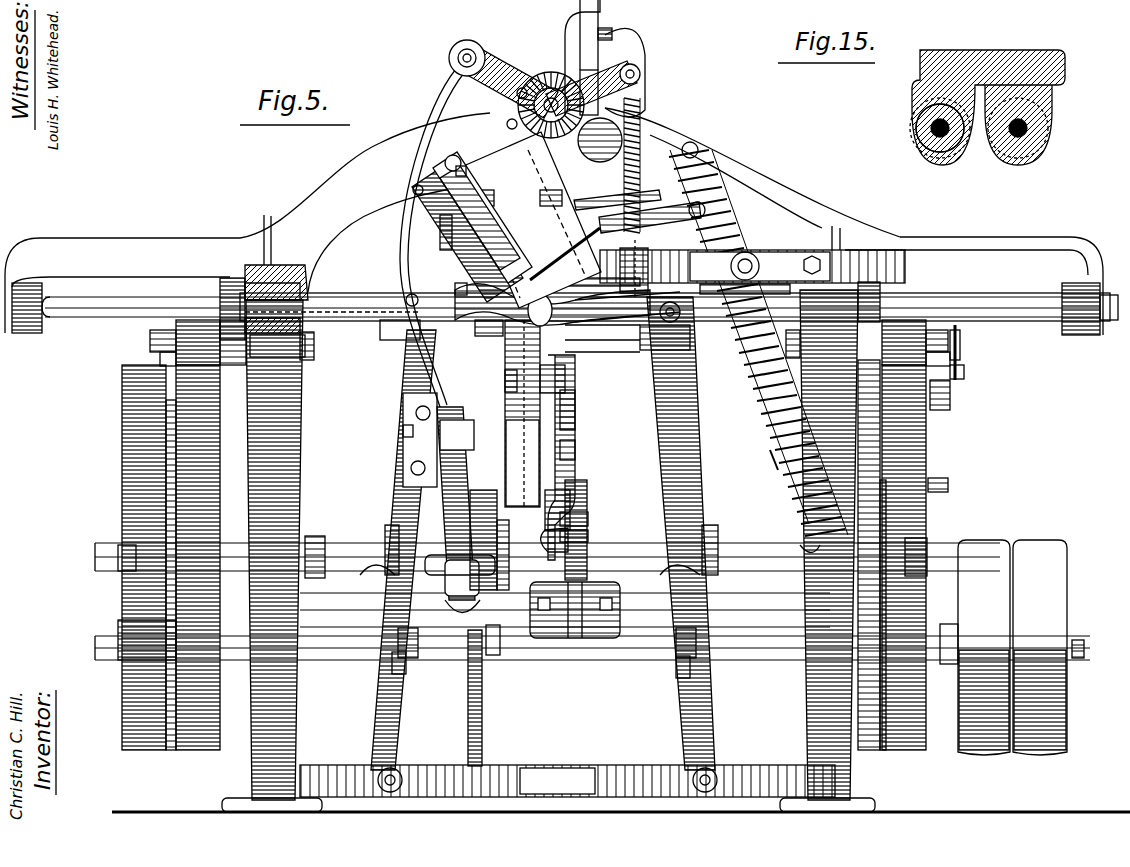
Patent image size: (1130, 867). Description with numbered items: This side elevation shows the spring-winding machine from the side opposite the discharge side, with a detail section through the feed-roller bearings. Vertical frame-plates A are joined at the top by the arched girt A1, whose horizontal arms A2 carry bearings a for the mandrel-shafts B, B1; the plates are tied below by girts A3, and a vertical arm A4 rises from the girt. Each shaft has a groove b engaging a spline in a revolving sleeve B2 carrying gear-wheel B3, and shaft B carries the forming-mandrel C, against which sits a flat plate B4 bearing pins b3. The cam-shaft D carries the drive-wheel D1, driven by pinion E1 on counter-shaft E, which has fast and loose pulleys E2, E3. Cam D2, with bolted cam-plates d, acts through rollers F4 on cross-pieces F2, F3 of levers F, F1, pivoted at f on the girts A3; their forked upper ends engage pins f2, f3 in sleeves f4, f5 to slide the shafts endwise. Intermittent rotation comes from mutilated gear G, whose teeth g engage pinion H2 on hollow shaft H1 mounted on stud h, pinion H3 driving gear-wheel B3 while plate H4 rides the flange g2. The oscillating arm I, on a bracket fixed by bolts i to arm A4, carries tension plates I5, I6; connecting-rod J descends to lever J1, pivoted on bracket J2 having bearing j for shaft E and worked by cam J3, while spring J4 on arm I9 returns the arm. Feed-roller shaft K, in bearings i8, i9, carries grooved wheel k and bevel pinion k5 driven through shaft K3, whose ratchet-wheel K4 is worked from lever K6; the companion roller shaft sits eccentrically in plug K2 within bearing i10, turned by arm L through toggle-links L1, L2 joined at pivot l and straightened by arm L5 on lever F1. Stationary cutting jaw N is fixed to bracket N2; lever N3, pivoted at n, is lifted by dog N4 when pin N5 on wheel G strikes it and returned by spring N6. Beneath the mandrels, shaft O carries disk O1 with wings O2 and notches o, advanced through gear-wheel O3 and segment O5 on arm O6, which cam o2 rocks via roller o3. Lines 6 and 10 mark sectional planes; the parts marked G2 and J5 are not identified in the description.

In FIG. 5, the frame-plate A is at (548, 551).
In FIG. 5, the arched girt A1 is at (570, 204).
In FIG. 5, the horizontal arm A2 is at (554, 286).
In FIG. 5, the longitudinal girt A3 is at (567, 781).
In FIG. 5, the vertical arm A4 is at (628, 60).
In FIG. 5, the mandrel-shaft B is at (1004, 310).
In FIG. 5, the mandrel-shaft B1 is at (138, 300).
In FIG. 5, the revolving sleeve B2 is at (305, 292).
In FIG. 5, the gear-wheel B3 is at (232, 285).
In FIG. 5, the flat plate B4 is at (636, 352).
In FIG. 5, the bearing a is at (1075, 290).
In FIG. 5, the longitudinal groove b is at (310, 312).
In FIG. 5, the pin b3 is at (596, 295).
In FIG. 5, the forming-mandrel C is at (470, 340).
In FIG. 5, the cam shaft D is at (100, 554).
In FIG. 5, the drive-wheel D1 is at (125, 497).
In FIG. 5, the cam D2 is at (395, 520).
In FIG. 5, the cam-plate d is at (526, 563).
In FIG. 5, the counter-shaft E is at (98, 647).
In FIG. 5, the pinion E1 is at (118, 630).
In FIG. 5, the belt-pulley E2 is at (1040, 647).
In FIG. 5, the belt-pulley E3 is at (984, 647).
In FIG. 5, the lever F is at (668, 710).
In FIG. 5, the lever F1 is at (405, 400).
In FIG. 5, the cross-piece F2 is at (680, 668).
In FIG. 5, the cross-piece F3 is at (405, 670).
In FIG. 5, the anti-friction roller F4 is at (415, 636).
In FIG. 5, the pivot f is at (715, 772).
In FIG. 5, the pin f2 is at (708, 350).
In FIG. 5, the pin f3 is at (394, 326).
In FIG. 5, the sleeve f4 is at (667, 300).
In FIG. 5, the sleeve f5 is at (408, 289).
In FIG. 5, the mutilated gear-wheel G is at (908, 758).
In FIG. 5, the gear G2 is at (205, 505).
In FIG. 5, the gear-teeth g is at (212, 472).
In FIG. 5, the bearing-flange g2 is at (122, 440).
In FIG. 5, the hollow shaft H1 is at (160, 340).
In FIG. 5, the gear-pinion H2 is at (195, 330).
In FIG. 5, the gear-pinion H3 is at (238, 365).
In FIG. 5, the bearing-plate H4 is at (160, 360).
In FIG. 5, the bearing-stud h is at (310, 345).
In FIG. 15, the oscillating arm I is at (985, 55).
In FIG. 5, the tension plate I5 is at (541, 232).
In FIG. 5, the tension plate I6 is at (478, 55).
In FIG. 5, the arm I9 is at (640, 80).
In FIG. 5, the bolt i is at (612, 38).
In FIG. 5, the bearing i8 is at (452, 295).
In FIG. 15, the bearing i8 is at (1040, 100).
In FIG. 5, the bearing i9 is at (457, 220).
In FIG. 15, the elongated bearing i10 is at (915, 100).
In FIG. 5, the connecting-rod J is at (452, 82).
In FIG. 5, the lever J1 is at (460, 553).
In FIG. 5, the bracket J2 is at (468, 702).
In FIG. 5, the cam J3 is at (482, 510).
In FIG. 5, the spiral spring J4 is at (660, 218).
In FIG. 5, the link J5 is at (768, 455).
In FIG. 5, the bearing j is at (790, 548).
In FIG. 5, the shaft K is at (478, 165).
In FIG. 15, the shaft K is at (1040, 131).
In FIG. 5, the cylindric plug K2 is at (581, 168).
In FIG. 15, the cylindric plug K2 is at (918, 130).
In FIG. 5, the shaft K3 is at (556, 75).
In FIG. 5, the ratchet-wheel K4 is at (987, 323).
In FIG. 5, the lever K6 is at (745, 286).
In FIG. 5, the grooved wheel k is at (520, 90).
In FIG. 15, the grooved wheel k is at (1038, 155).
In FIG. 5, the beveled gear-pinion k5 is at (471, 338).
In FIG. 5, the arm L is at (565, 249).
In FIG. 5, the toggle-link L1 is at (472, 215).
In FIG. 5, the toggle-link L2 is at (469, 230).
In FIG. 5, the arm L5 is at (403, 432).
In FIG. 5, the pivot l is at (435, 187).
In FIG. 5, the stationary jaw N is at (620, 282).
In FIG. 5, the bracket N2 is at (720, 230).
In FIG. 5, the lever N3 is at (752, 266).
In FIG. 5, the swinging dog N4 is at (945, 410).
In FIG. 5, the pin N5 is at (955, 472).
In FIG. 5, the coiled spring N6 is at (618, 165).
In FIG. 5, the pivot n is at (748, 250).
In FIG. 5, the shaft O is at (630, 385).
In FIG. 5, the disk O1 is at (365, 605).
In FIG. 5, the wing O2 is at (522, 413).
In FIG. 5, the gear-wheel O3 is at (575, 380).
In FIG. 5, the gear-segment O5 is at (575, 448).
In FIG. 5, the oscillating arm O6 is at (555, 540).
In FIG. 5, the notch o is at (505, 380).
In FIG. 5, the cam o2 is at (582, 503).
In FIG. 5, the anti-friction roller o3 is at (578, 520).
In FIG. 5, the section line 10 is at (616, 240).
In FIG. 5, the section line 6 is at (428, 26).